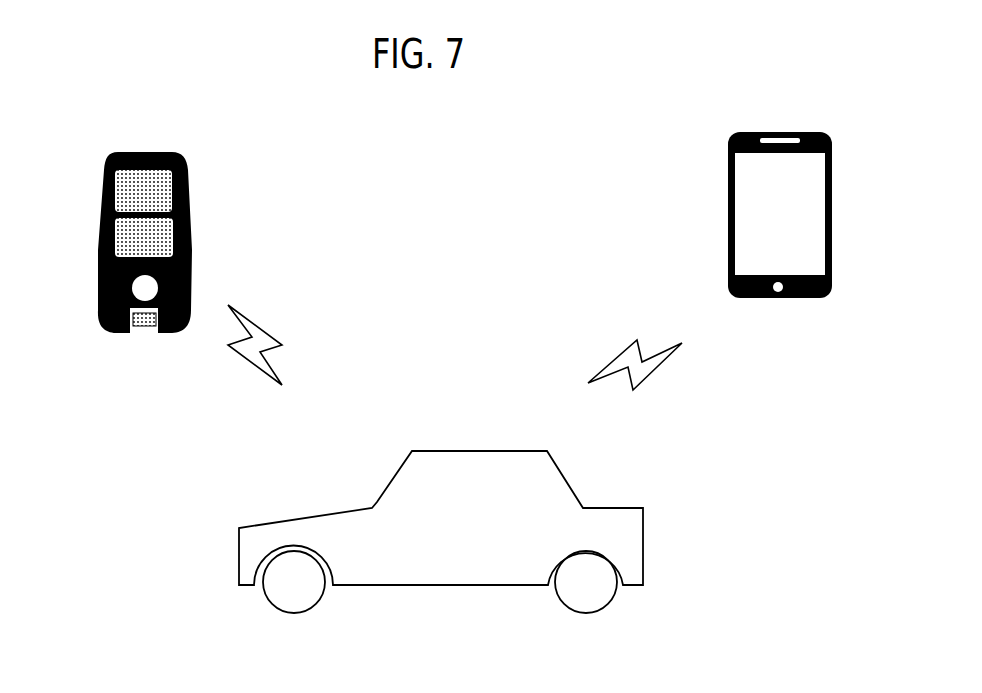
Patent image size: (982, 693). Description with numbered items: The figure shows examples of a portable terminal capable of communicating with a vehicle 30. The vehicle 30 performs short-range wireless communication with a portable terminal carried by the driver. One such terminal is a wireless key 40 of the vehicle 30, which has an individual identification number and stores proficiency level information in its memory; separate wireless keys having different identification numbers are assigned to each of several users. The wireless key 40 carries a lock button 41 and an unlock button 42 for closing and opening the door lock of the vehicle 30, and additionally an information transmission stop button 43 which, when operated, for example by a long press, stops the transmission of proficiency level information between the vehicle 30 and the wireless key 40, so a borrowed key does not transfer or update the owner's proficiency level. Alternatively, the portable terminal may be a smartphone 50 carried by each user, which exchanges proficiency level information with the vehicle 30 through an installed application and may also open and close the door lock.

The vehicle 30 is at (397, 476).
The wireless key 40 is at (143, 152).
The lock button 41 is at (172, 187).
The unlock button 42 is at (174, 227).
The information transmission stop button 43 is at (132, 297).
The smartphone 50 is at (778, 297).